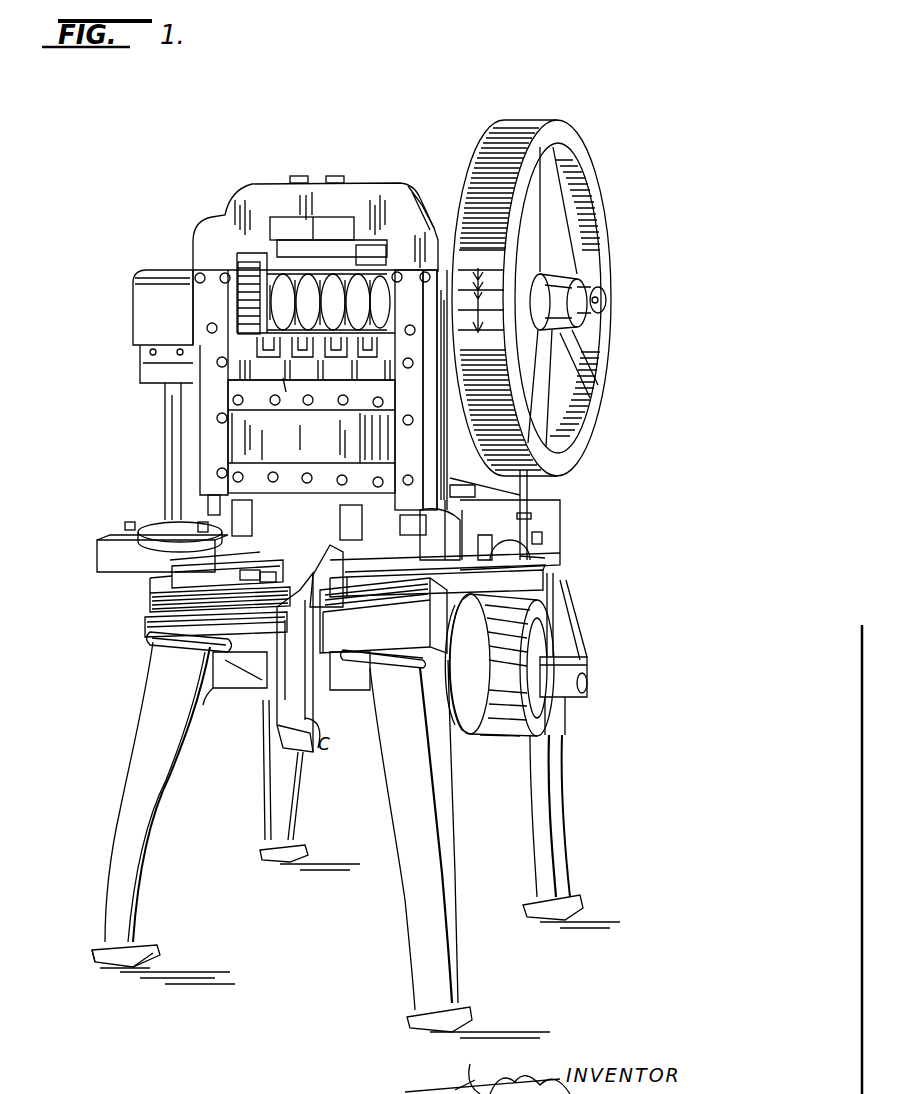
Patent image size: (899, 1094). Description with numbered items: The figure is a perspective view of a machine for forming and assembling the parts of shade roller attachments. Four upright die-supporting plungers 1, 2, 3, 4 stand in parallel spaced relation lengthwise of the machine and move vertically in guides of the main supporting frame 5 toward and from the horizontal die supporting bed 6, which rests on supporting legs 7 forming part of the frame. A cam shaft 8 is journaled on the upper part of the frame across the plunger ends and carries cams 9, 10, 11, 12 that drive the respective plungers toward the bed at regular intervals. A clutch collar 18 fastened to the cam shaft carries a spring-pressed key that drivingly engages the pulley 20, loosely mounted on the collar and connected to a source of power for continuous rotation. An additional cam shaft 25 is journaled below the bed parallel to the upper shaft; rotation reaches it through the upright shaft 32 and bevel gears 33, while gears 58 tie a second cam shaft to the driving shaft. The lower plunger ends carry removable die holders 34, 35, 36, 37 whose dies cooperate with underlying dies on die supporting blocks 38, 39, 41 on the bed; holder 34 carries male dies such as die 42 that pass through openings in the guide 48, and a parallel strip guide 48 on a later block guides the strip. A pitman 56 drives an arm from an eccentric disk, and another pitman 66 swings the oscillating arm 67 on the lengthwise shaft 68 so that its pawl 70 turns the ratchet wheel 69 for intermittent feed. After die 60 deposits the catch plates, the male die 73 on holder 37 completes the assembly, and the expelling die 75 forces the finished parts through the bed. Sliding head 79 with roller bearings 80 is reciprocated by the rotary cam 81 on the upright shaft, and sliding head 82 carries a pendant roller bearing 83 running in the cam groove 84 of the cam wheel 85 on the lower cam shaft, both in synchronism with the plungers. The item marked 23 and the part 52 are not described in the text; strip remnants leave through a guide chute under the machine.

The die-supporting plunger 1 is at (248, 398).
The die-supporting plunger 2 is at (612, 97).
The die-supporting plunger 3 is at (303, 398).
The die-supporting plunger 4 is at (360, 399).
The main supporting frame 5 is at (240, 446).
The die supporting bed 6 is at (195, 594).
The supporting legs 7 is at (248, 80).
The cam shaft 8 is at (292, 73).
The cam 9 is at (318, 73).
The cam 10 is at (362, 67).
The cam 11 is at (330, 230).
The cam 12 is at (371, 245).
The clutch collar 18 is at (446, 300).
The pulley 20 is at (494, 258).
The rod connection 23 is at (462, 490).
The additional cam shaft 25 is at (580, 693).
The upright shaft 32 is at (166, 424).
The bevel gears 33 is at (150, 622).
The die holder 34 is at (250, 483).
The die holder 35 is at (285, 483).
The die holder 36 is at (319, 483).
The die holder 37 is at (360, 485).
The die supporting block 38 is at (245, 578).
The die supporting block 39 is at (262, 582).
The die supporting block 41 is at (358, 620).
The male die 42 is at (244, 522).
The guide 48 is at (283, 648).
The link 52 is at (200, 556).
The pitman 56 is at (210, 500).
The gears 58 is at (236, 300).
The die 60 is at (352, 528).
The pitman 66 is at (532, 497).
The oscillating arm 67 is at (540, 538).
The lengthwise shaft 68 is at (540, 556).
The ratchet wheel 69 is at (512, 541).
The pawl 70 is at (530, 522).
The male die 73 is at (410, 530).
The expelling die 75 is at (430, 540).
The sliding head 79 is at (118, 536).
The roller bearings 80 is at (128, 526).
The rotary cam 81 is at (150, 530).
The sliding head 82 is at (437, 581).
The pendant roller bearing 83 is at (499, 668).
The cam groove 84 is at (468, 736).
The cam wheel 85 is at (505, 736).